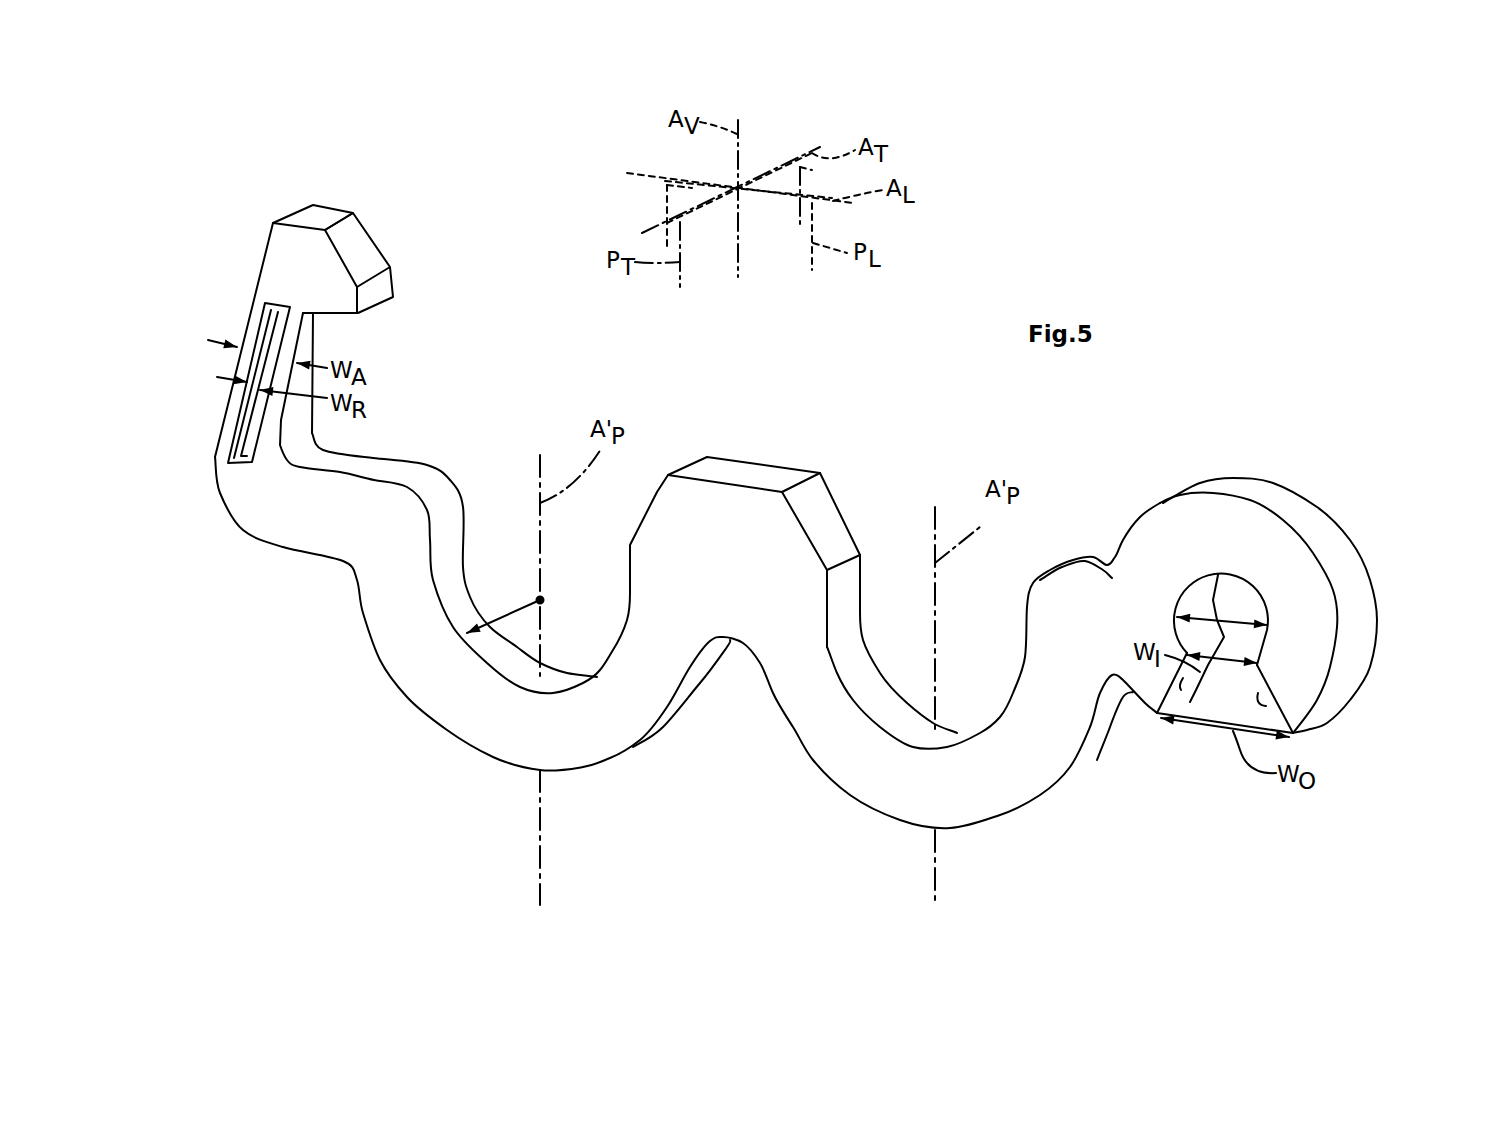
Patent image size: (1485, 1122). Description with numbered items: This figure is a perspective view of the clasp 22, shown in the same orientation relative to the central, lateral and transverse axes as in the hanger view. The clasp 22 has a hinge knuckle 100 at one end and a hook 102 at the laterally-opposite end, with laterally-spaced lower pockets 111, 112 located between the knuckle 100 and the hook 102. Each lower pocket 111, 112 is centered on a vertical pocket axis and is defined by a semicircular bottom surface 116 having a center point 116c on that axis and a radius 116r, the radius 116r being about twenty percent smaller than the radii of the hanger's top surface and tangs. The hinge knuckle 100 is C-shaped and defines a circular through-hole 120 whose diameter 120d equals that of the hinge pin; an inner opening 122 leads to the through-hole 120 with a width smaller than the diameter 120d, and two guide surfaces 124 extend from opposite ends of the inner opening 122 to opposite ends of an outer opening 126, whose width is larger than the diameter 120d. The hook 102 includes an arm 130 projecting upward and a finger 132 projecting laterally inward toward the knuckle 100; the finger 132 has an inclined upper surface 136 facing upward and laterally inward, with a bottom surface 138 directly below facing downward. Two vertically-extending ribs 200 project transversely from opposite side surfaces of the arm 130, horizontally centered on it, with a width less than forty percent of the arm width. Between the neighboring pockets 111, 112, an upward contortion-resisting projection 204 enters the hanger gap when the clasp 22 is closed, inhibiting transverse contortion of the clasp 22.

The clasp 22 is at (1223, 376).
The hinge knuckle 100 is at (1340, 556).
The hook 102 is at (218, 417).
The lower pocket 111 is at (600, 597).
The lower pocket 112 is at (997, 652).
The semicircular bottom surface 116 is at (517, 672).
The center point 116c is at (541, 598).
The radius 116r is at (520, 603).
The circular through-hole 120 is at (1217, 595).
The diameter 120d is at (1220, 637).
The inner opening 122 is at (1238, 652).
The guide surfaces 124 is at (1185, 688).
The outer opening 126 is at (1215, 735).
The arm 130 is at (250, 313).
The finger 132 is at (333, 277).
The inclined upper surface 136 is at (367, 253).
The bottom surface 138 is at (335, 318).
The ribs 200 is at (237, 437).
The contortion-resisting projection 204 is at (752, 470).